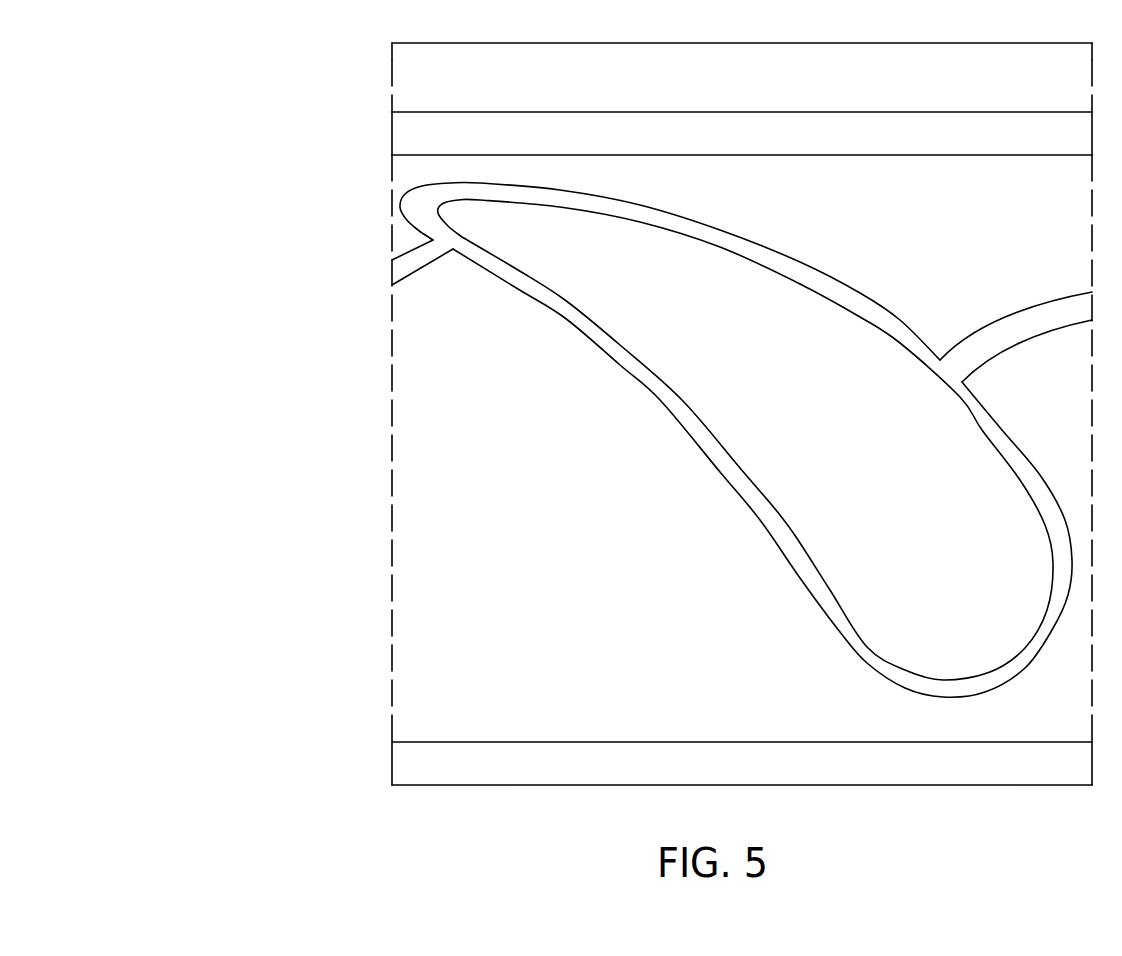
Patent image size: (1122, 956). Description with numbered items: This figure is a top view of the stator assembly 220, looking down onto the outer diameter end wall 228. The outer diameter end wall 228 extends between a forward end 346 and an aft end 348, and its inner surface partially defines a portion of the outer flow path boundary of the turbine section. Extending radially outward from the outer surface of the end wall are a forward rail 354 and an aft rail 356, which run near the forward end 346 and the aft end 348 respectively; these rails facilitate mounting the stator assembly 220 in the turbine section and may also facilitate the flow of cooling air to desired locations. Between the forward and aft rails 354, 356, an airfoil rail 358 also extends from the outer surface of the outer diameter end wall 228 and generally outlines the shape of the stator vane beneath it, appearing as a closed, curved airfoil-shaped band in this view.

The stator assembly 220 is at (638, 414).
The outer diameter end wall 228 is at (672, 439).
The airfoil rail 358 is at (851, 285).
The aft end 348 is at (402, 77).
The aft rail 356 is at (402, 135).
The forward end 346 is at (402, 724).
The forward rail 354 is at (402, 762).